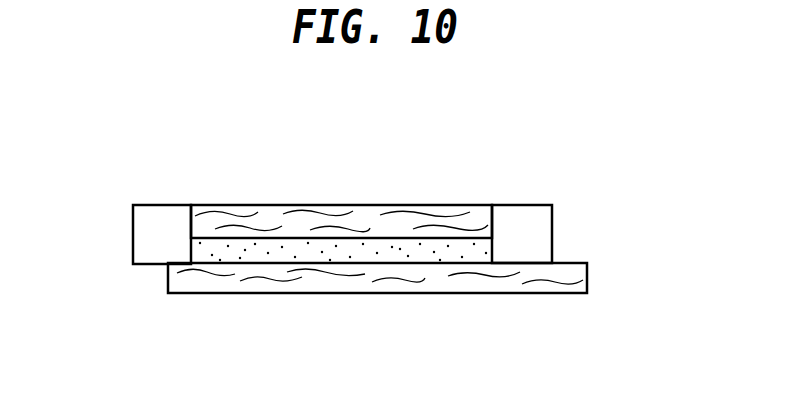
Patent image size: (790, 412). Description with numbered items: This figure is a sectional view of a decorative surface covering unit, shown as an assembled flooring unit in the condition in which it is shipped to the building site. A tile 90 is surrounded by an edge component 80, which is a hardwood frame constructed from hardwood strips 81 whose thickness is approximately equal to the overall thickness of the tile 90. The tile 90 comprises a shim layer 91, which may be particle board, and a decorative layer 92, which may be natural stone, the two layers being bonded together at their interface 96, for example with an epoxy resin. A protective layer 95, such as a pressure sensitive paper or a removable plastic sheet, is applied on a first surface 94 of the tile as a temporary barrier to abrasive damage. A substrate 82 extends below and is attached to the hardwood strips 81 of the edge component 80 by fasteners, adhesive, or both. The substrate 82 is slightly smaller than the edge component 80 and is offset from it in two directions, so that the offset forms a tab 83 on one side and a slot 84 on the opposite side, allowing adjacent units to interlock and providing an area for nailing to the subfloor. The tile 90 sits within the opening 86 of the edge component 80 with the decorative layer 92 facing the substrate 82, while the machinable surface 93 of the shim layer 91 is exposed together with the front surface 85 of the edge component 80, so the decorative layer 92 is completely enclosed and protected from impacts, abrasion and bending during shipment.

The edge component 80 is at (560, 220).
The hardwood strips 81 is at (525, 212).
The substrate 82 is at (315, 282).
The tab 83 is at (570, 263).
The slot 84 is at (153, 273).
The front surface 85 is at (162, 205).
The opening 86 is at (205, 212).
The tile 90 is at (244, 195).
The shim layer 91 is at (354, 220).
The decorative layer 92 is at (478, 250).
The machinable surface 93 is at (292, 205).
The first surface 94 is at (476, 263).
The protective layer 95 is at (438, 263).
The interface 96 is at (402, 242).